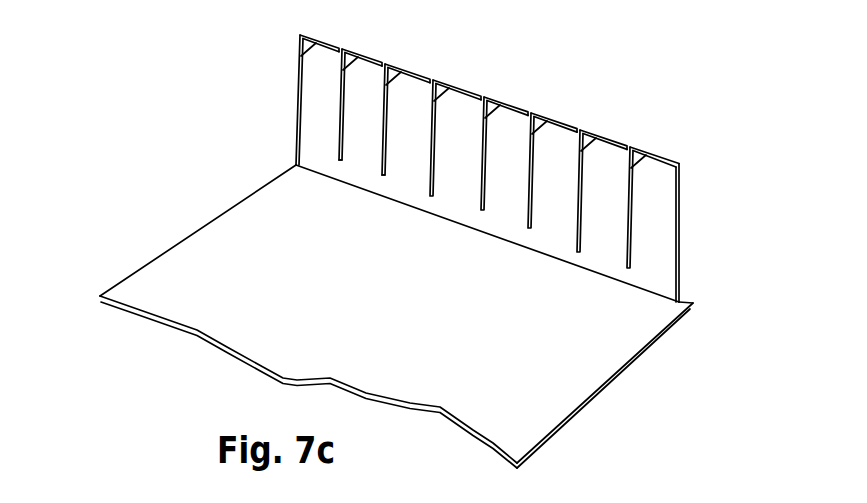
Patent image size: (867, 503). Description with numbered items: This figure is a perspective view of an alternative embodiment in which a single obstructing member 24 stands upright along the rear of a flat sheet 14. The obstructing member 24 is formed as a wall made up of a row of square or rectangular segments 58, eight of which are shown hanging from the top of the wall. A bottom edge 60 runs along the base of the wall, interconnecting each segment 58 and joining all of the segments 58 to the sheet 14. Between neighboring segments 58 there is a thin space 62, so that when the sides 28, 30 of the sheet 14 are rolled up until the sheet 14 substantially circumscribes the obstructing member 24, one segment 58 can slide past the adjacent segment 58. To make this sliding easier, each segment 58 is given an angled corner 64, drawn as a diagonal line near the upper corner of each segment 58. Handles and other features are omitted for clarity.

The sheet 14 is at (468, 334).
The obstructing member 24 is at (510, 90).
The side 28 is at (150, 239).
The side 30 is at (618, 401).
The segments 58 is at (332, 110).
The bottom edge 60 is at (710, 310).
The thin space 62 is at (338, 162).
The angled corner 64 is at (349, 58).